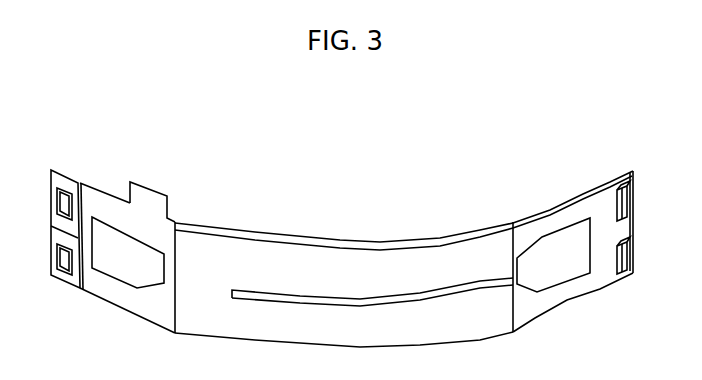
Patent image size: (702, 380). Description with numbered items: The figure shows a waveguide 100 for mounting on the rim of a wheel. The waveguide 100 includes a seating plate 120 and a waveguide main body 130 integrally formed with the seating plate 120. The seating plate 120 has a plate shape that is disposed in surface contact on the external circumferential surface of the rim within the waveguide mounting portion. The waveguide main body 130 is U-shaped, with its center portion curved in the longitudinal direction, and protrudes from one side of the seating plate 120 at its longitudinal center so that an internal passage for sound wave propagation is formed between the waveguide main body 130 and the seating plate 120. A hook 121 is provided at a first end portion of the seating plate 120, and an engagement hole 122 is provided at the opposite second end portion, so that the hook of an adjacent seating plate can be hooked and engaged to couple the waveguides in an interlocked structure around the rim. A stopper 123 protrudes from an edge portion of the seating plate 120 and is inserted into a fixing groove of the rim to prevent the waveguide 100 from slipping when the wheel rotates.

The waveguide 100 is at (386, 168).
The seating plate 120 is at (103, 207).
The hook 121 is at (624, 186).
The engagement hole 122 is at (60, 192).
The stopper 123 is at (148, 195).
The waveguide main body 130 is at (207, 252).